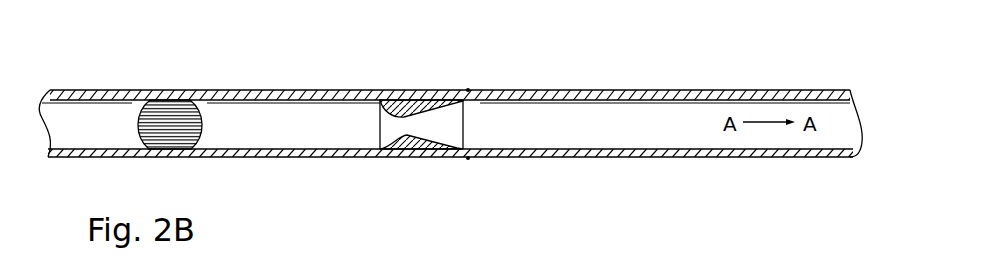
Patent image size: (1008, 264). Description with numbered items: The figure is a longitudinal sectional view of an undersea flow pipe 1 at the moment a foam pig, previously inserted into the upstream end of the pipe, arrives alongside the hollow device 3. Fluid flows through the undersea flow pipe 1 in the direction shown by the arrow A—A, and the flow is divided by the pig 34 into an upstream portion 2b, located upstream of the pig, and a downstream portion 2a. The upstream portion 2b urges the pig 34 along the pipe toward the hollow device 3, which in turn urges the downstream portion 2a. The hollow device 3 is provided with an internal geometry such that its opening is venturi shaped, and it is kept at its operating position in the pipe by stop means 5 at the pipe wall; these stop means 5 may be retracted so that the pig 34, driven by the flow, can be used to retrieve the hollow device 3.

The undersea flow pipe 1 is at (610, 93).
The downstream portion of the flow 2a is at (441, 126).
The upstream portion of the flow 2b is at (75, 126).
The hollow device 3 is at (423, 100).
The stop means 5 is at (468, 88).
The pig 34 is at (165, 118).